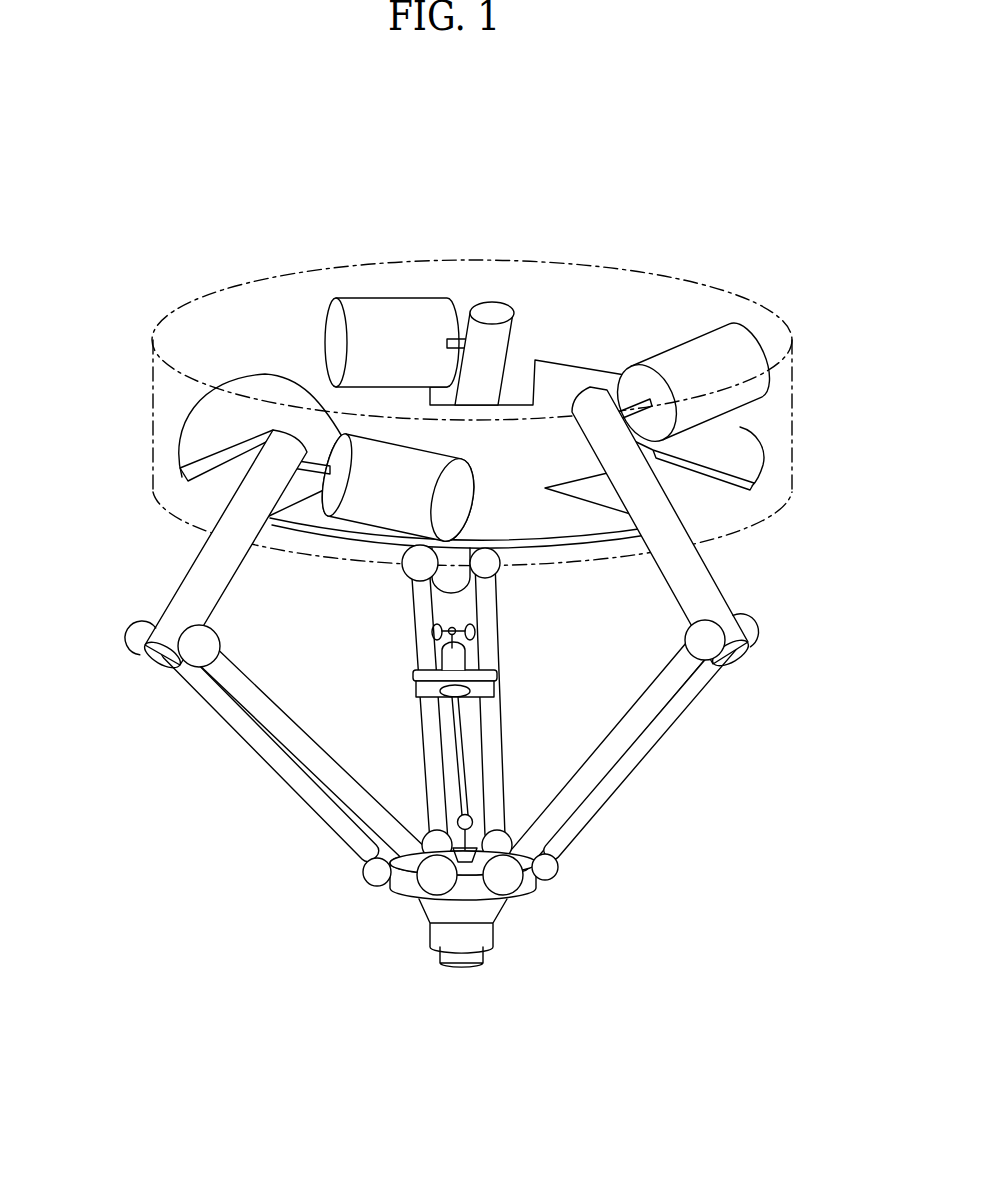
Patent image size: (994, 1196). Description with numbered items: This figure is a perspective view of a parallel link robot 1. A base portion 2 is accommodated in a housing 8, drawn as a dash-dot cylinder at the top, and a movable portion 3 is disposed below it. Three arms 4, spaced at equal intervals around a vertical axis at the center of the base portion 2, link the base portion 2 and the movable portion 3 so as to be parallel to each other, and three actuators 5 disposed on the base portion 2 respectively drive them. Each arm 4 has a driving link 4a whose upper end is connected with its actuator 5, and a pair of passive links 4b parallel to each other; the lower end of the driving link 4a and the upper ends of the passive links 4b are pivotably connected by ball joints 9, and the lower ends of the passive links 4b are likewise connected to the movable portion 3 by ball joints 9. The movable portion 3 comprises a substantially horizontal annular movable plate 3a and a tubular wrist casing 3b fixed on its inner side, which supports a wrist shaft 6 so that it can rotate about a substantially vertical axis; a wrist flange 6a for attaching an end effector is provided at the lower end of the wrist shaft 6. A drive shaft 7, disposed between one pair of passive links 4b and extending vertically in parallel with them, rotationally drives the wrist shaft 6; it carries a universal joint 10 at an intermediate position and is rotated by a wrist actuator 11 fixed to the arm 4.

The parallel link robot 1 is at (261, 147).
The base portion 2 is at (745, 428).
The movable portion 3 is at (449, 957).
The annular movable plate 3a is at (400, 881).
The tubular wrist casing 3b is at (497, 905).
The arm 4 is at (444, 535).
The driving link 4a is at (490, 312).
The passive link 4b is at (422, 611).
The actuator 5 is at (387, 312).
The wrist shaft 6 is at (477, 846).
The wrist flange 6a is at (457, 964).
The drive shaft 7 is at (465, 716).
The housing 8 is at (793, 468).
The ball joint 9 is at (510, 553).
The universal joint 10 is at (461, 815).
The wrist actuator 11 is at (450, 659).